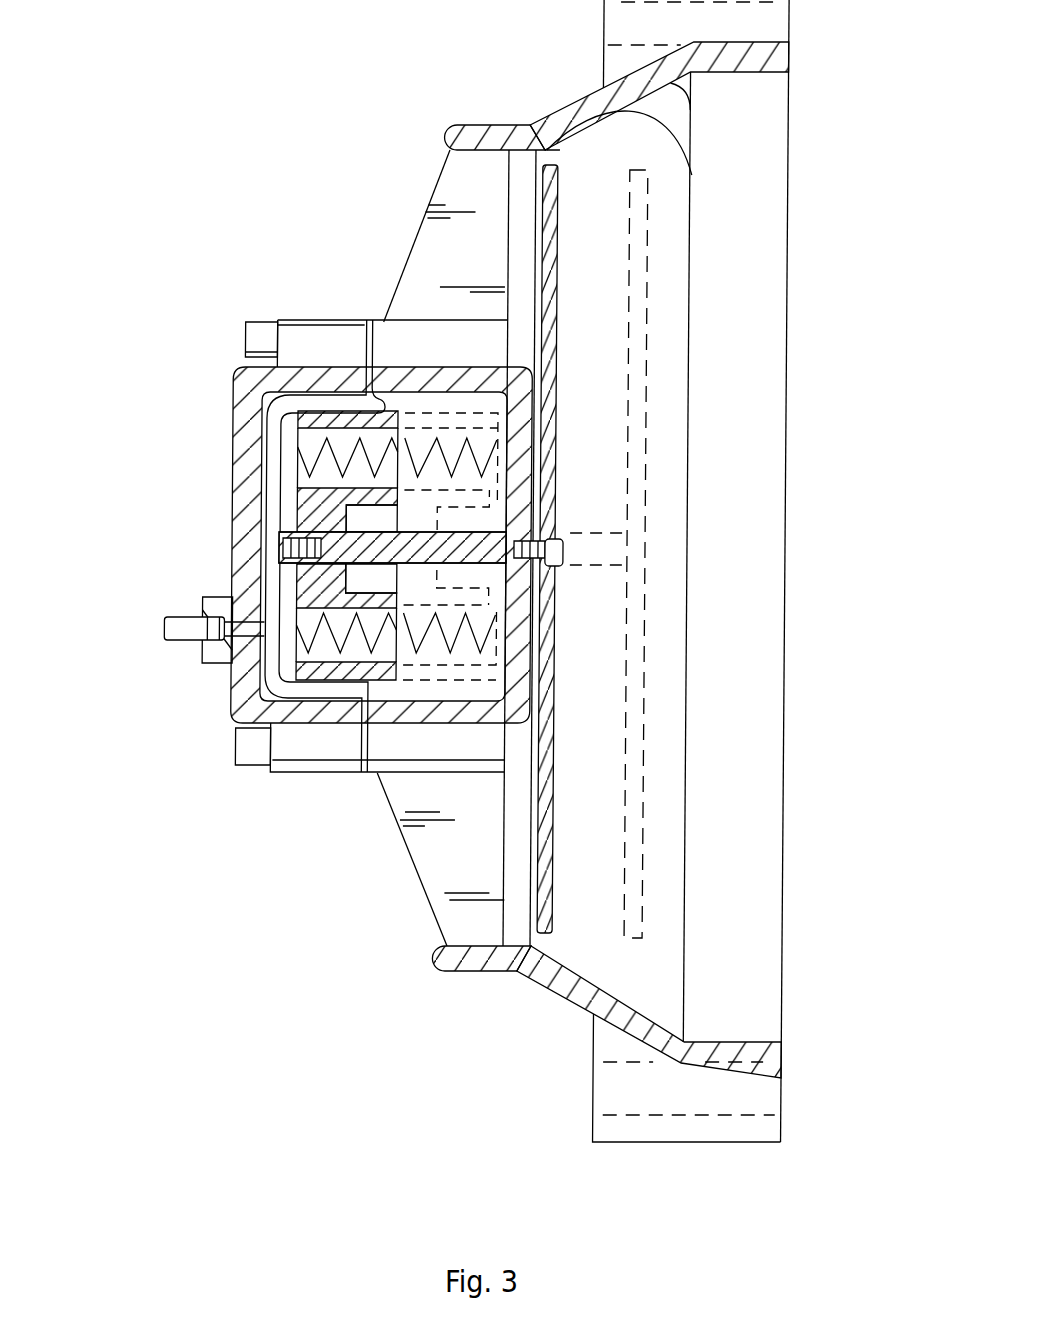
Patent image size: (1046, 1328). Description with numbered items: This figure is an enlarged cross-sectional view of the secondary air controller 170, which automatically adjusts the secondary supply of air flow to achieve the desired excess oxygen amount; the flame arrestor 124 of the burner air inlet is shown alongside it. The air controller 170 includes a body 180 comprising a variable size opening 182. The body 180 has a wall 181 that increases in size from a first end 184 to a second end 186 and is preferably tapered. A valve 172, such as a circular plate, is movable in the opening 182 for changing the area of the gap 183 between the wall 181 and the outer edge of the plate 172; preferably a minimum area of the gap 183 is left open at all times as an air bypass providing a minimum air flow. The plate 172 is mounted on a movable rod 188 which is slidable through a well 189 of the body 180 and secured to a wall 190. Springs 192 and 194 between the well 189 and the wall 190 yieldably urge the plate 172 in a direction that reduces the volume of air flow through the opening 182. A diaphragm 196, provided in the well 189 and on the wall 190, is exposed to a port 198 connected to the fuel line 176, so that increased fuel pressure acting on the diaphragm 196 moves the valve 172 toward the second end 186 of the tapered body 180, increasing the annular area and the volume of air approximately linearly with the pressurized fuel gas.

The flame arrestor 124 is at (773, 153).
The secondary air controller 170 is at (472, 124).
The valve 172 is at (560, 310).
The line 176 is at (168, 628).
The body 180 is at (560, 112).
The wall 181 is at (690, 162).
The variable size opening 182 is at (607, 250).
The gap 183 is at (549, 945).
The first end 184 is at (587, 146).
The second end 186 is at (678, 95).
The movable rod 188 is at (527, 508).
The well 189 is at (523, 433).
The wall 190 is at (303, 513).
The spring 192 is at (300, 448).
The spring 194 is at (445, 628).
The diaphragm 196 is at (277, 470).
The port 198 is at (236, 597).